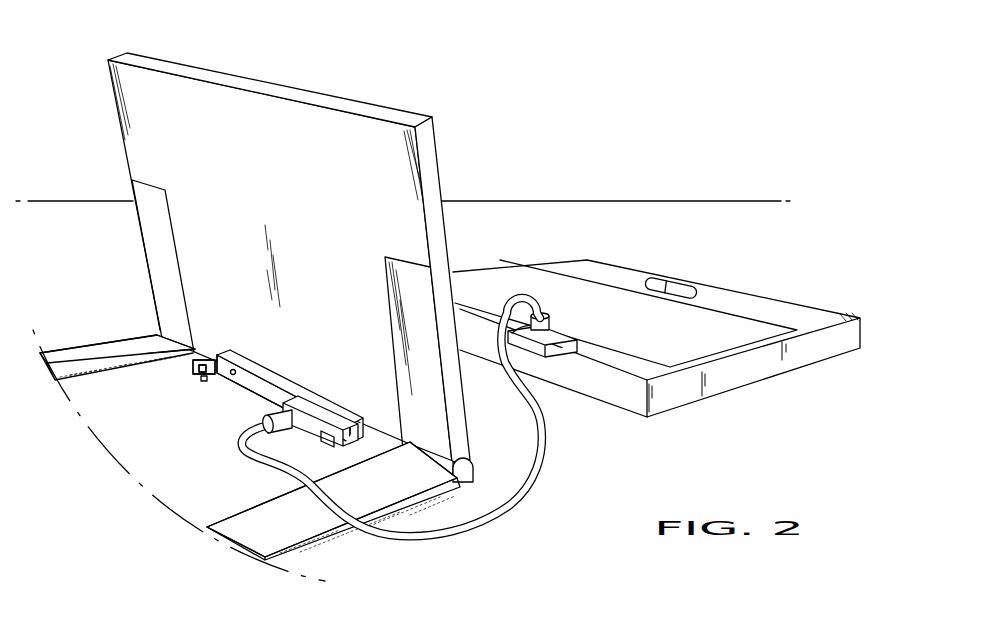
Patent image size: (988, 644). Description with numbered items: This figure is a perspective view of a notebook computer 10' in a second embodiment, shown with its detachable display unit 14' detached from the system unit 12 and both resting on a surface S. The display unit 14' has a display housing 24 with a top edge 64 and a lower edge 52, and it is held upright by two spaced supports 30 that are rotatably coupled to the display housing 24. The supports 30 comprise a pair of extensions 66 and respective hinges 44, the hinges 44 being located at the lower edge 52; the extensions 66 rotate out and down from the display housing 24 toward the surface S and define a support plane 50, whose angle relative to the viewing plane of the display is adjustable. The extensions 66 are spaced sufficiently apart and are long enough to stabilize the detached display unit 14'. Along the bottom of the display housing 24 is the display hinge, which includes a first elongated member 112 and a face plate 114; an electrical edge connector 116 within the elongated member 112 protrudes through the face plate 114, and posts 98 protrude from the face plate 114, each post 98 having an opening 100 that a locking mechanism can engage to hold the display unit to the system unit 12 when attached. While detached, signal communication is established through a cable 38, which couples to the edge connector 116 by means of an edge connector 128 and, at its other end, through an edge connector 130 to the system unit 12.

The notebook computer 10' is at (596, 80).
The system unit 12 is at (775, 292).
The detachable display unit 14' is at (306, 244).
The display housing 24 is at (440, 158).
The spaced supports 30 is at (103, 338).
The cable 38 is at (544, 463).
The hinges 44 is at (165, 328).
The support plane 50 is at (100, 457).
The lower edge 52 is at (378, 452).
The top edge 64 is at (260, 86).
The extensions 66 is at (65, 350).
The post 98 is at (204, 381).
The opening 100 is at (200, 376).
The first elongated member 112 is at (248, 352).
The face plate 114 is at (260, 388).
The electrical edge connector 116 is at (313, 410).
The edge connector 128 is at (297, 410).
The edge connector 130 is at (560, 339).
The surface S is at (528, 238).